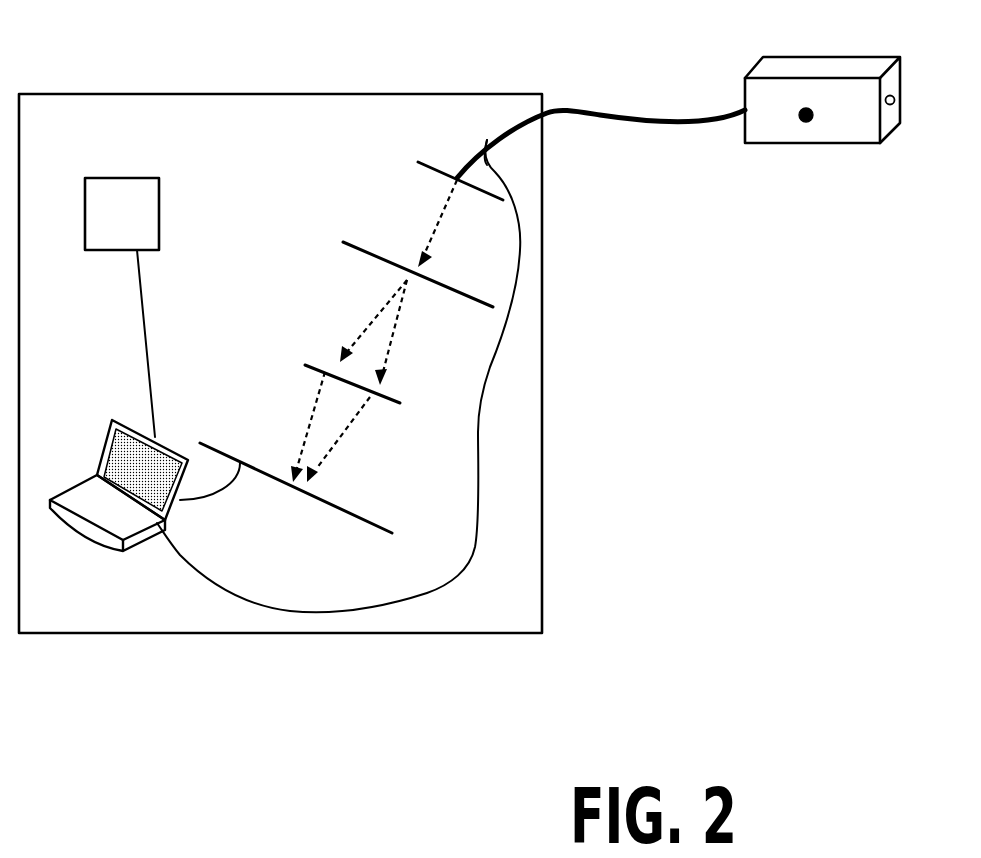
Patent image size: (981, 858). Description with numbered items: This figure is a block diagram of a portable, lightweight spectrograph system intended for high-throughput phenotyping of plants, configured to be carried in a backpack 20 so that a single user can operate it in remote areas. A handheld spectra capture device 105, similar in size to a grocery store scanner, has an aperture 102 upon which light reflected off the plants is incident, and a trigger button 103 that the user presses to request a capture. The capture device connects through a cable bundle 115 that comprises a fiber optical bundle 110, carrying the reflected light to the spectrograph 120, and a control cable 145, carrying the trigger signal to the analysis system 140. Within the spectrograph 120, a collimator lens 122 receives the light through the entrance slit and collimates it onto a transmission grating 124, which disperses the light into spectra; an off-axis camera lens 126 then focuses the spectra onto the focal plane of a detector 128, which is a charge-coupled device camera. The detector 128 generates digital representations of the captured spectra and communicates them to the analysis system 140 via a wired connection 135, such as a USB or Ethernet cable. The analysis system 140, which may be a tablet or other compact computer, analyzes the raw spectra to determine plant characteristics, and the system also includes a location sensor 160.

The backpack 20 is at (223, 94).
The spectra capture device 105 is at (830, 57).
The aperture 102 is at (890, 105).
The trigger button 103 is at (806, 115).
The cable bundle 115 is at (620, 120).
The fiber optical bundle 110 is at (493, 147).
The spectrograph 120 is at (322, 157).
The collimator lens 122 is at (417, 162).
The transmission grating 124 is at (367, 248).
The off-axis camera lens 126 is at (323, 368).
The detector 128 is at (357, 517).
The wired connection 135 is at (205, 500).
The analysis system 140 is at (117, 418).
The control cable 145 is at (478, 432).
The location sensor 160 is at (104, 177).